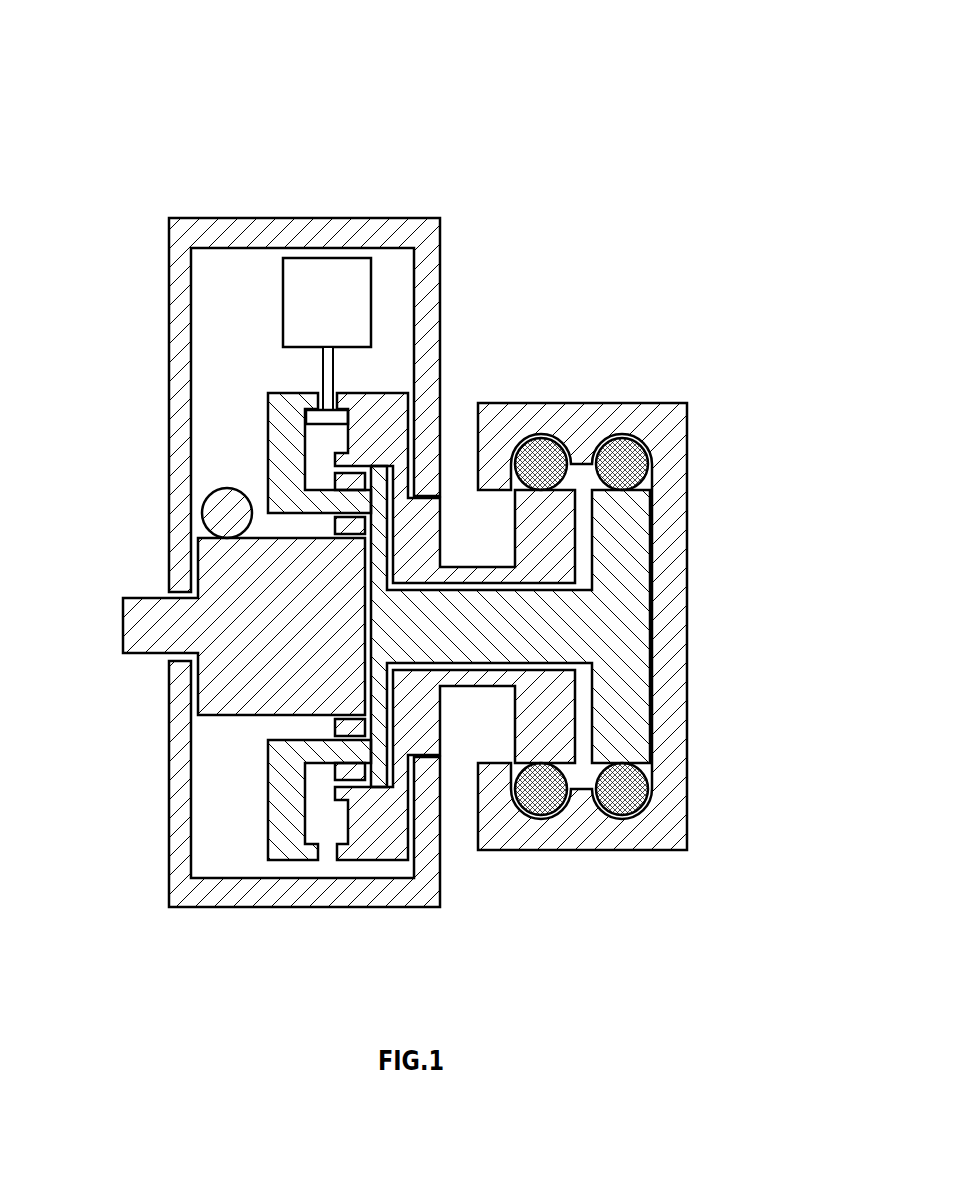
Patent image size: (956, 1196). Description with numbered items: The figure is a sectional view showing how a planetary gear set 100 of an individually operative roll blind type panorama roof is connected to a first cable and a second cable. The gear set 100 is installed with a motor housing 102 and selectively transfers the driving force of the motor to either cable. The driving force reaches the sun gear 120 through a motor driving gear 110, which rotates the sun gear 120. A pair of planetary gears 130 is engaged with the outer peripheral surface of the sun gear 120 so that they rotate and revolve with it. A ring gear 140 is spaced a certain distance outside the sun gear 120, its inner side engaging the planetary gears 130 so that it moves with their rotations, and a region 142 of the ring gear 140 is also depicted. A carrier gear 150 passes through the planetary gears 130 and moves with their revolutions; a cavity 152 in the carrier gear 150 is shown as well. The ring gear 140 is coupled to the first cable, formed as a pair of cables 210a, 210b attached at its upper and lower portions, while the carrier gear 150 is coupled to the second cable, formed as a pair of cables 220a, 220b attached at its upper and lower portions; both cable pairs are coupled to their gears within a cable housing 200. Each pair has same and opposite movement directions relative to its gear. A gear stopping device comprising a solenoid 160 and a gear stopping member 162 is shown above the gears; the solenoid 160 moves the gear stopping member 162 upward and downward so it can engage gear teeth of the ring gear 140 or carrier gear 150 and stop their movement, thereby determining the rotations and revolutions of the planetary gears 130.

The planetary gear set 100 is at (213, 178).
The motor housing 102 is at (442, 255).
The motor driving gear 110 is at (215, 497).
The sun gear 120 is at (150, 630).
The planetary gears 130 is at (340, 772).
The ring gear 140 is at (378, 835).
The bearing cover protrusion 142 is at (362, 440).
The carrier gear 150 is at (285, 843).
The holder cavity 152 is at (306, 430).
The solenoid 160 is at (325, 295).
The gear stopping member 162 is at (348, 410).
The cable housing 200 is at (690, 617).
The first cable 210a is at (541, 440).
The first cable 210b is at (541, 815).
The second cable 220a is at (630, 462).
The second cable 220b is at (620, 812).